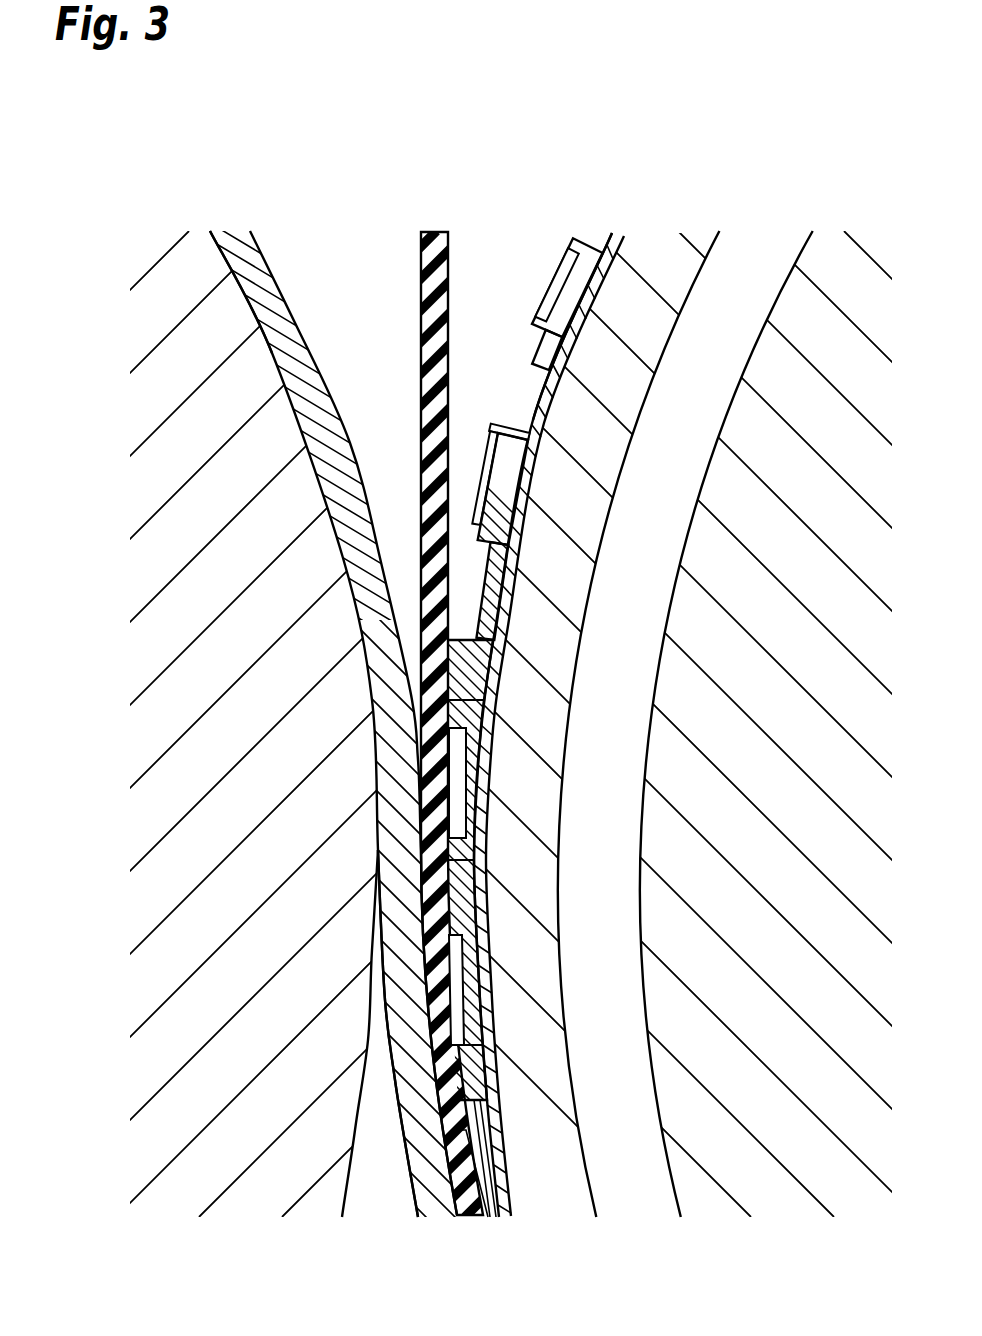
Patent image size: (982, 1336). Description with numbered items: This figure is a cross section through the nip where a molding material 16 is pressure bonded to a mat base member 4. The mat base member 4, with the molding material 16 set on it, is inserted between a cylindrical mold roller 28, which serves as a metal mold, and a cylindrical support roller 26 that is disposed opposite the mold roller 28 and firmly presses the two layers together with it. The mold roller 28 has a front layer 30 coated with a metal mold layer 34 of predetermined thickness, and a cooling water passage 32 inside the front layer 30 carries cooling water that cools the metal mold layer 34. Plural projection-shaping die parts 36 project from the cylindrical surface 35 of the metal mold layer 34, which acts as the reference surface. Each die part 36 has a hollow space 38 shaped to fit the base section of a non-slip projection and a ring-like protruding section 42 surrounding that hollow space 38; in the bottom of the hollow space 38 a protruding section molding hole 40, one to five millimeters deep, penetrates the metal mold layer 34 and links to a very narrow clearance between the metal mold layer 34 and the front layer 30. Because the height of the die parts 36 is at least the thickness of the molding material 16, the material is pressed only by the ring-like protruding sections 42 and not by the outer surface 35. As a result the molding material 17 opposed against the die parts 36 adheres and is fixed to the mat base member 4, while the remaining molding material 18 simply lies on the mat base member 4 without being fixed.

The mat base member 4 is at (285, 327).
The molding material 16 is at (420, 455).
The molding material opposed against the projection-shaping die parts 17 is at (430, 880).
The molding material exclusive of the molding material opposed against the die parts 18 is at (437, 978).
The cylindrical support roller 26 is at (244, 287).
The cylindrical mold roller 28 is at (558, 206).
The front layer 30 is at (655, 265).
The cooling water passage 32 is at (748, 270).
The metal mold layer 34 is at (613, 234).
The cylindrical surface 35 is at (512, 438).
The projection-shaping die parts 36 is at (538, 352).
The hollow spaces 38 is at (546, 306).
The protruding section molding holes 40 is at (543, 296).
The ring-like protruding sections 42 is at (531, 340).